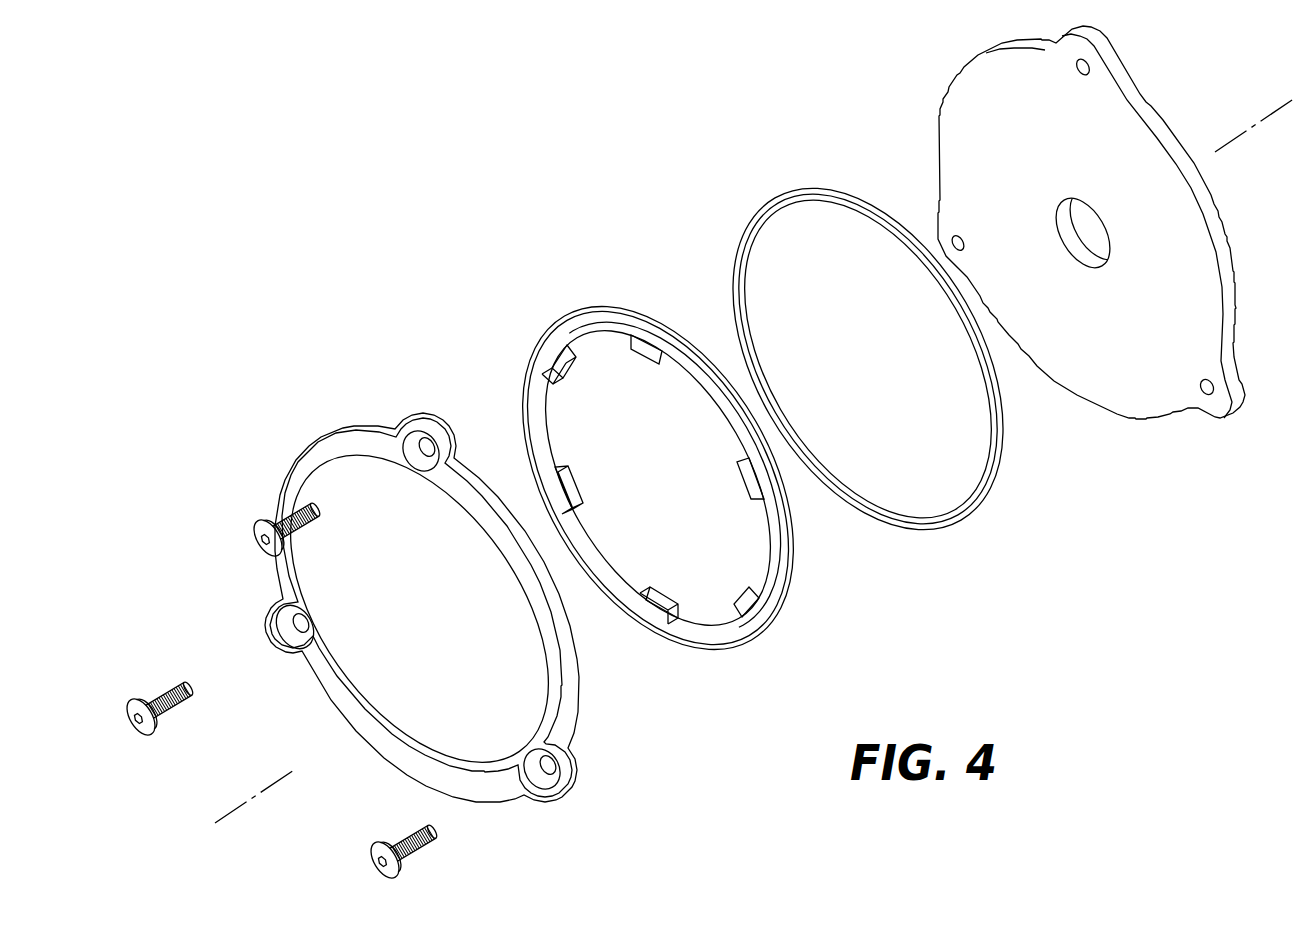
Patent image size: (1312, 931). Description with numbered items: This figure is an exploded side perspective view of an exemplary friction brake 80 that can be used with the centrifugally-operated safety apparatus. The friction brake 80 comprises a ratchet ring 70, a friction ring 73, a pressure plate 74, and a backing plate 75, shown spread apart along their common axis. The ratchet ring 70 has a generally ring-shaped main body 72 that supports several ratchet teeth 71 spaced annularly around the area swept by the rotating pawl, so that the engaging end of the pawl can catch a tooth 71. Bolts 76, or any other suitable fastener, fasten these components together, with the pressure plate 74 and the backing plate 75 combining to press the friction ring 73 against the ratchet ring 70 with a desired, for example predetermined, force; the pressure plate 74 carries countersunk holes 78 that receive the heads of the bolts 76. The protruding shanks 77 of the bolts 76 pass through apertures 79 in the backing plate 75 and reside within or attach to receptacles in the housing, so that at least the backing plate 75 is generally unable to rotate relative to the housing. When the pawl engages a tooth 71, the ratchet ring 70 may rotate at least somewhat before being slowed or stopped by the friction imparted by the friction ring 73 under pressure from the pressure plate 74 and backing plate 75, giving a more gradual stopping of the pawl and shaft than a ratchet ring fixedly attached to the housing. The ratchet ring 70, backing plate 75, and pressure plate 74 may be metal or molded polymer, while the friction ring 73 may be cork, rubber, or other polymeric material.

The ratchet ring 70 is at (526, 305).
The ratchet tooth 71 is at (575, 487).
The main body 72 is at (532, 407).
The friction ring 73 is at (782, 188).
The pressure plate 74 is at (323, 430).
The backing plate 75 is at (1208, 190).
The bolts 76 is at (142, 731).
The protruding shanks 77 is at (433, 847).
The mounting hole 78 is at (300, 615).
The apertures 79 is at (1205, 395).
The friction brake 80 is at (384, 131).